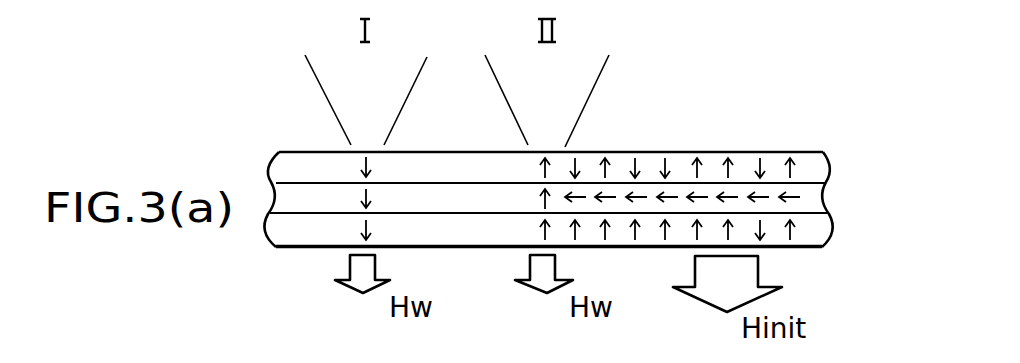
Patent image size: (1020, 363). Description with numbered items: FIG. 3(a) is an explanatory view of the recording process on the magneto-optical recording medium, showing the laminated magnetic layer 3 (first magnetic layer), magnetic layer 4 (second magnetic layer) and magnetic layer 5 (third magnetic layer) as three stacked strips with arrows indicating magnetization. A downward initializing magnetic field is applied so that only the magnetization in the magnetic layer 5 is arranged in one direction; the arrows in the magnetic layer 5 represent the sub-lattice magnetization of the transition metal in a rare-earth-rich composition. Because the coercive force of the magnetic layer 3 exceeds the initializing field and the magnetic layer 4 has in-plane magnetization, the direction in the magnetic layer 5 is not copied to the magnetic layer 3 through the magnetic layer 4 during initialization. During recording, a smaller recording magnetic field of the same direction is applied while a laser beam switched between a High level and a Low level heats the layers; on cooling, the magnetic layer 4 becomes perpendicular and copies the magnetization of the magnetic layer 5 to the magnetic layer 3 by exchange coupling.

The magnetic layer 3 is at (828, 160).
The magnetic layer 4 is at (829, 195).
The magnetic layer 5 is at (829, 228).